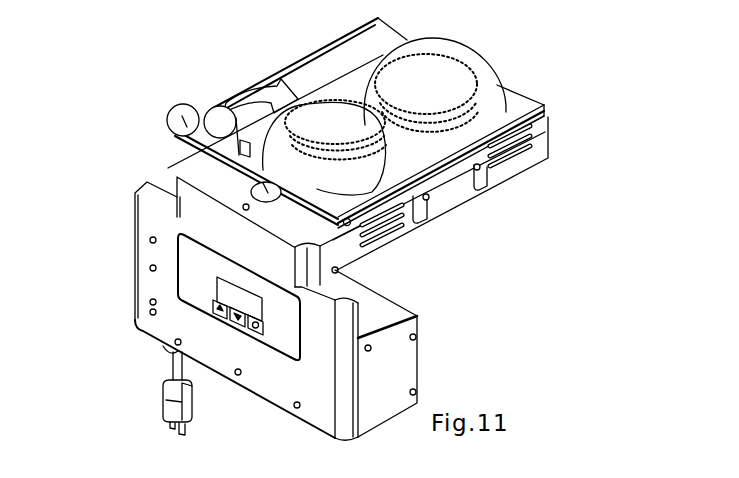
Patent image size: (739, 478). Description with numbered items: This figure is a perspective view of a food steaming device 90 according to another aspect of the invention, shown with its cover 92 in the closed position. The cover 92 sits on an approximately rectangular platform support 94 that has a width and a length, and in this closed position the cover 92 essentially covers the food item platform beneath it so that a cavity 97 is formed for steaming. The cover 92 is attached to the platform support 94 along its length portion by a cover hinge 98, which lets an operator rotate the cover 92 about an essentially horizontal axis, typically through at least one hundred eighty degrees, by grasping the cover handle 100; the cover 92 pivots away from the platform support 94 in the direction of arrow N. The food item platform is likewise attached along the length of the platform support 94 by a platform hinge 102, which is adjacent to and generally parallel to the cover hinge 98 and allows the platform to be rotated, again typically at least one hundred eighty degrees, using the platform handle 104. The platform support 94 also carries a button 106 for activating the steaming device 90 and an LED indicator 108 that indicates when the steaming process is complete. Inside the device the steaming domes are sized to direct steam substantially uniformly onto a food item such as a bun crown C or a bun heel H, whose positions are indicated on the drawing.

The food steaming device 90 is at (96, 101).
The cover 92 is at (483, 75).
The platform support 94 is at (343, 241).
The cavity 97 is at (425, 144).
The cover hinge 98 is at (548, 118).
The cover handle 100 is at (218, 113).
The platform hinge 102 is at (547, 110).
The platform handle 104 is at (178, 112).
The button 106 is at (192, 168).
The LED indicator 108 is at (246, 204).
The arrow N is at (254, 93).
The bun heel H is at (323, 127).
The bun crown C is at (433, 82).